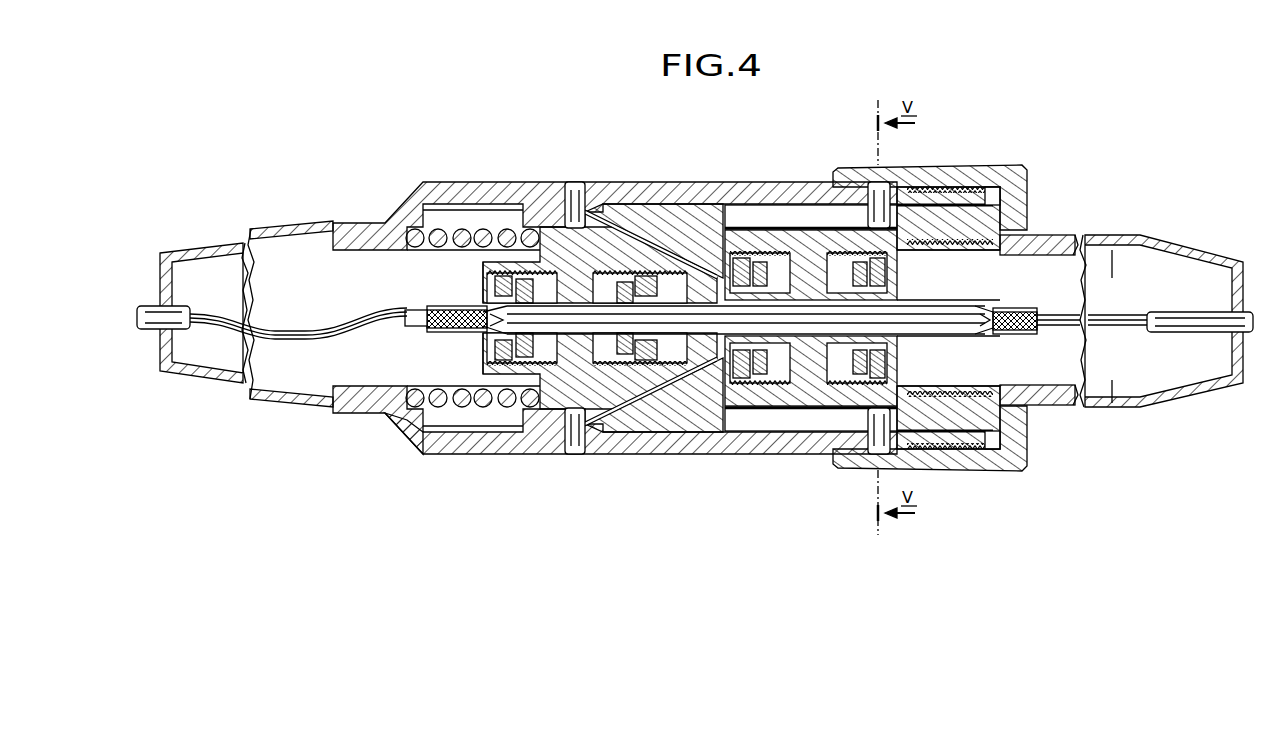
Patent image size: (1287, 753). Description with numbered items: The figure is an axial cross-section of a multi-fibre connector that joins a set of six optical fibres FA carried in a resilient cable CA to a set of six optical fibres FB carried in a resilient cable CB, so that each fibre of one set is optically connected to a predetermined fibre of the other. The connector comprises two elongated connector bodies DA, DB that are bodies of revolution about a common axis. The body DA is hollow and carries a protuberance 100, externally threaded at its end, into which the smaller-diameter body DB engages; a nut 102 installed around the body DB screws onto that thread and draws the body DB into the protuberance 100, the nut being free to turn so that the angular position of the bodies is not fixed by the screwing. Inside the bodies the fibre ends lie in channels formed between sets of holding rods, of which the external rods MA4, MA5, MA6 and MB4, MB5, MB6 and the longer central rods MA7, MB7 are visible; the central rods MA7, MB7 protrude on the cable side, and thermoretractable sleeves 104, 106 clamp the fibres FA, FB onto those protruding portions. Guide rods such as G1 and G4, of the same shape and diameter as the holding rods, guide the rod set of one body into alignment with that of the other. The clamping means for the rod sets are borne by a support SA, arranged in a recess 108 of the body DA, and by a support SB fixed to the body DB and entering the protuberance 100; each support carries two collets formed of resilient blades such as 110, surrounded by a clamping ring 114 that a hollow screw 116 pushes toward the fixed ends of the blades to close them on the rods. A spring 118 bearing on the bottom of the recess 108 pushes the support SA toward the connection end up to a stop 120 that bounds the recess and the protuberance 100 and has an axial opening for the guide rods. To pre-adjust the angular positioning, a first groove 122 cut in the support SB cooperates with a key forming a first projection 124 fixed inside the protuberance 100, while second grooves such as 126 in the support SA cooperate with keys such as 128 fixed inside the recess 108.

The protuberance 100 is at (760, 454).
The nut 102 is at (948, 170).
The thermoretractable sleeve 104 is at (480, 333).
The thermoretractable sleeve 106 is at (1032, 332).
The recess 108 is at (468, 413).
The resilient blade 110 is at (897, 299).
The clamping ring 114 is at (892, 280).
The hollow screw 116 is at (897, 263).
The spring 118 is at (423, 430).
The stop 120 is at (692, 410).
The first groove 122 is at (760, 215).
The first projection 124 is at (887, 197).
The second groove 126 is at (552, 218).
The second projection 128 is at (577, 187).
The resilient cable CA is at (152, 306).
The resilient cable CB is at (1250, 332).
The connector body DA is at (400, 420).
The connector body DB is at (1092, 398).
The optical fibres FA is at (365, 312).
The optical fibres FB is at (1117, 332).
The guide rod G1 is at (897, 305).
The guide rod G4 is at (897, 358).
The holding rod MA4 is at (488, 327).
The holding rod MA5 is at (485, 310).
The holding rod MA6 is at (490, 303).
The central holding rod MA7 is at (410, 316).
The holding rod MB4 is at (970, 333).
The holding rod MB5 is at (993, 317).
The holding rod MB6 is at (980, 313).
The central holding rod MB7 is at (1053, 314).
The support SA is at (552, 397).
The support SB is at (810, 403).